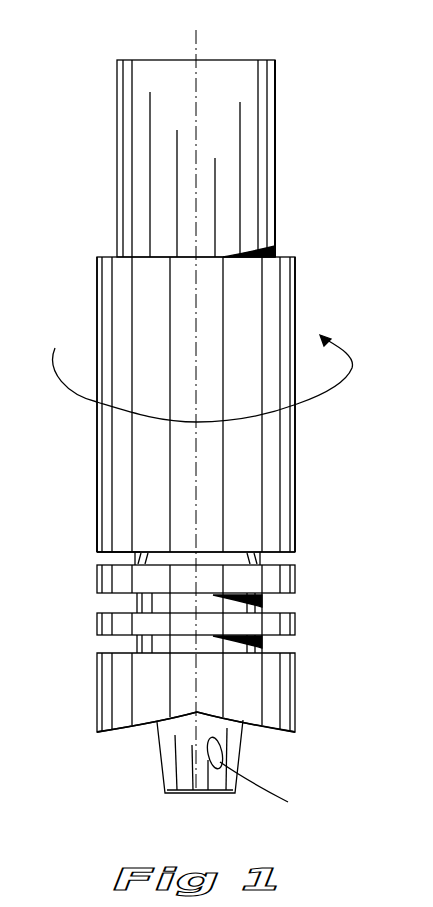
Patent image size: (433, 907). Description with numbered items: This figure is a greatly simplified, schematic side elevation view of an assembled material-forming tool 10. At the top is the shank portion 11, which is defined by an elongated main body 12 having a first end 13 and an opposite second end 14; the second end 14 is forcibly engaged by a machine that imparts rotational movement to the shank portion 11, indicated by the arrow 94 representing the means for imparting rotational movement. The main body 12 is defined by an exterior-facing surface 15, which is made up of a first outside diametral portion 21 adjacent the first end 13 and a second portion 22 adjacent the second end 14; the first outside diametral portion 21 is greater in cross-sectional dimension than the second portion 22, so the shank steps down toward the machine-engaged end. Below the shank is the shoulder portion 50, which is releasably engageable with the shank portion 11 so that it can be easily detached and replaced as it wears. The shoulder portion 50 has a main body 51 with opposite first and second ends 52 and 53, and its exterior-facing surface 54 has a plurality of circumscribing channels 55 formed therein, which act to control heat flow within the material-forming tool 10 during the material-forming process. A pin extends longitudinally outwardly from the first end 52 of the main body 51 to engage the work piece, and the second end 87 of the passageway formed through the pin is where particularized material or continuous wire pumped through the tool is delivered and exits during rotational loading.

The material-forming tool 10 is at (214, 432).
The shank portion 11 is at (198, 403).
The main body 12 is at (97, 465).
The first end 13 is at (297, 547).
The second end 14 is at (236, 140).
The exterior-facing surface 15 is at (297, 453).
The first outside diametral portion 21 is at (98, 522).
The second portion 22 is at (275, 163).
The shoulder portion 50 is at (210, 685).
The main body 51 is at (239, 691).
The first end 52 is at (300, 727).
The second end 53 is at (290, 559).
The exterior-facing surface 54 is at (97, 578).
The circumscribing channels 55 is at (291, 643).
The second end 87 is at (213, 769).
The means for imparting rotational movement 94 is at (350, 370).